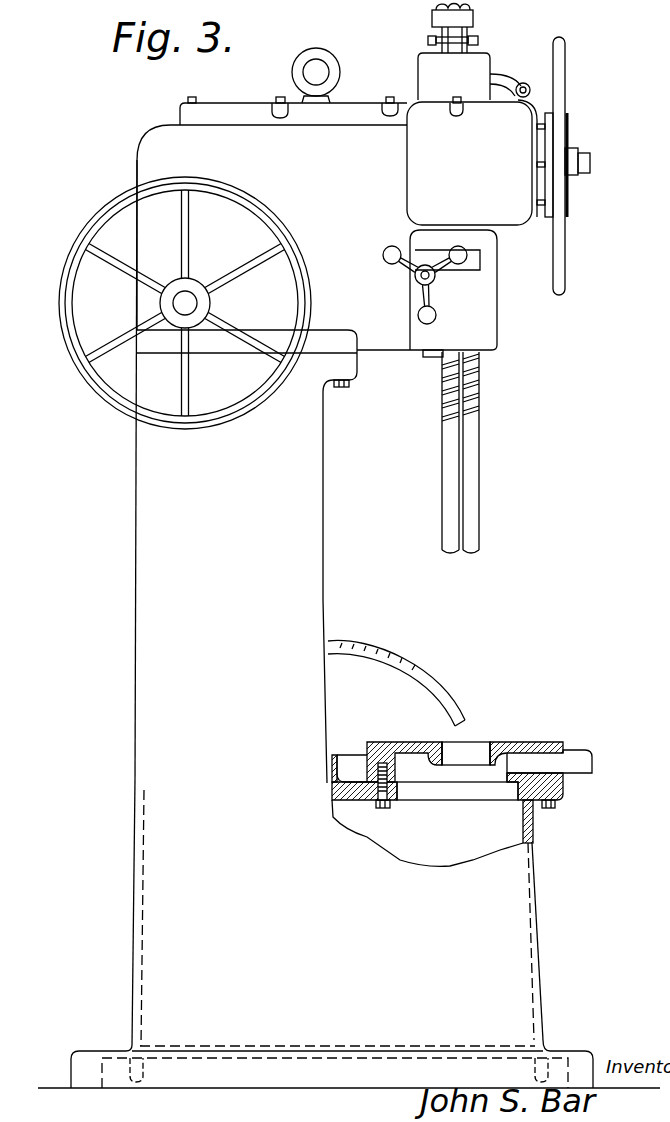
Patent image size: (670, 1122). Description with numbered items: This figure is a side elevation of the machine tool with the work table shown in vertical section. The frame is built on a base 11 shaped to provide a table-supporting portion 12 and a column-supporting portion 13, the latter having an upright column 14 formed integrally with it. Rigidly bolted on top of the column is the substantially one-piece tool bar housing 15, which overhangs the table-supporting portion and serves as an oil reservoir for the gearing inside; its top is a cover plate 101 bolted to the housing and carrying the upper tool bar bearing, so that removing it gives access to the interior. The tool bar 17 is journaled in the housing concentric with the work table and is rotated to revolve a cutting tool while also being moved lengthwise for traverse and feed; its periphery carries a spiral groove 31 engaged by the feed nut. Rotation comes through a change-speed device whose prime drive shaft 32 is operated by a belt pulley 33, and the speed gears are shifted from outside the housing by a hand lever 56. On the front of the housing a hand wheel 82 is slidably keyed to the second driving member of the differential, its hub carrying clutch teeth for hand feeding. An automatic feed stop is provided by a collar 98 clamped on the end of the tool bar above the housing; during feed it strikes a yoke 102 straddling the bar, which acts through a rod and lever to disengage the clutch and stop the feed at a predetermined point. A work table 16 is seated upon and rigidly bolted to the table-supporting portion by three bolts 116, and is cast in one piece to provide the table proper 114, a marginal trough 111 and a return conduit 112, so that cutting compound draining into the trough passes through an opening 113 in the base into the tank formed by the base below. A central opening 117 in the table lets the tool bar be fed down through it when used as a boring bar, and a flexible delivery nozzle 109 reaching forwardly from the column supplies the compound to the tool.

The base 11 is at (325, 1037).
The table-supporting portion 12 is at (508, 962).
The column-supporting portion 13 is at (167, 875).
The upright column 14 is at (293, 478).
The tool bar housing 15 is at (337, 209).
The work table 16 is at (597, 763).
The tool bar 17 is at (476, 489).
The spiral groove 31 is at (480, 410).
The prime drive shaft 32 is at (175, 302).
The belt pulley 33 is at (63, 317).
The hand lever 56 is at (388, 258).
The hand wheel 82 is at (567, 257).
The collar 98 is at (470, 17).
The cover plate 101 is at (217, 112).
The yoke 102 is at (475, 45).
The flexible delivery nozzle 109 is at (425, 673).
The marginal trough 111 is at (350, 762).
The return conduit 112 is at (535, 762).
The opening 113 is at (490, 790).
The table proper 114 is at (492, 742).
The bolts 116 is at (383, 808).
The central opening 117 is at (457, 752).